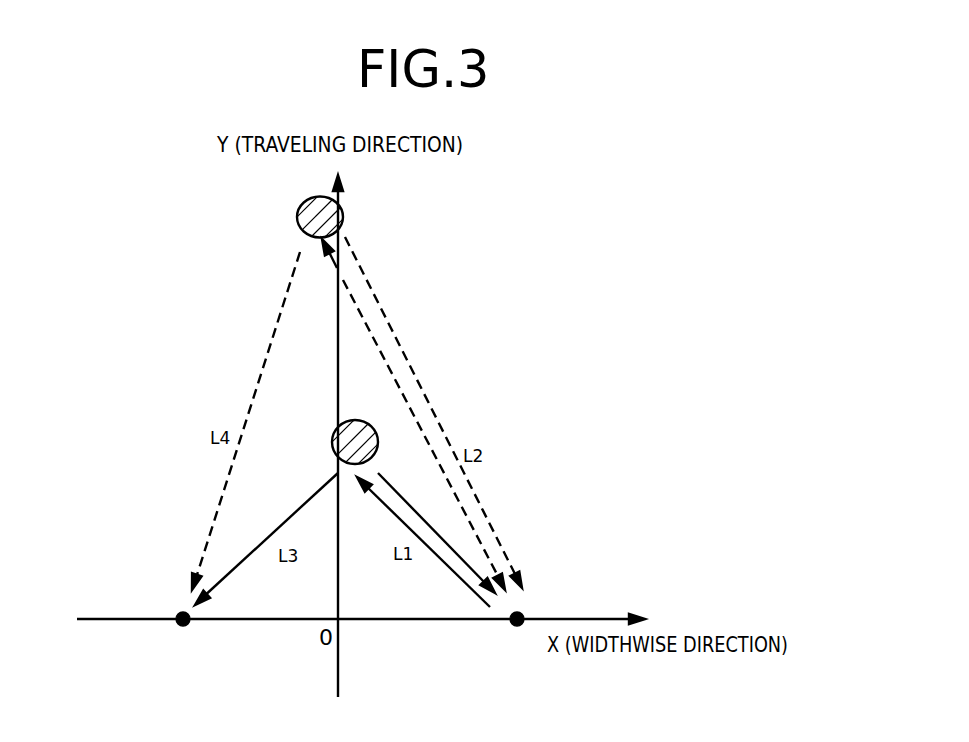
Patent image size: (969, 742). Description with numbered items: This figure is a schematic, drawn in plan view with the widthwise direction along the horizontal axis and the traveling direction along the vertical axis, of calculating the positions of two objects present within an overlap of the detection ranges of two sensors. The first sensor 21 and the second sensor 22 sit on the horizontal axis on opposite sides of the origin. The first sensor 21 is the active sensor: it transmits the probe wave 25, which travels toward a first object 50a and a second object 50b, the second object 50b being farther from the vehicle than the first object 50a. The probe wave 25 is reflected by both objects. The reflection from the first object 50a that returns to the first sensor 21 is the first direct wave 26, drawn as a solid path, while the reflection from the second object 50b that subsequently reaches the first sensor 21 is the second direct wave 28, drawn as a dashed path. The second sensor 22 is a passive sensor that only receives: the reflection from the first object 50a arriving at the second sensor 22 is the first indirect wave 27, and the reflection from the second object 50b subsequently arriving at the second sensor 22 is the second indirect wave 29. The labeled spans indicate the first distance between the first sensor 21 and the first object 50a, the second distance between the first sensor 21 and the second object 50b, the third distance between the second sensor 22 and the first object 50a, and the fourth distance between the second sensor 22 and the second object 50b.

The first sensor 21 is at (519, 616).
The second sensor 22 is at (182, 616).
The probe wave 25 is at (395, 383).
The first direct wave 26 is at (389, 483).
The first indirect wave 27 is at (314, 497).
The second direct wave 28 is at (398, 343).
The second indirect wave 29 is at (270, 343).
The first object 50a is at (336, 433).
The second object 50b is at (299, 212).